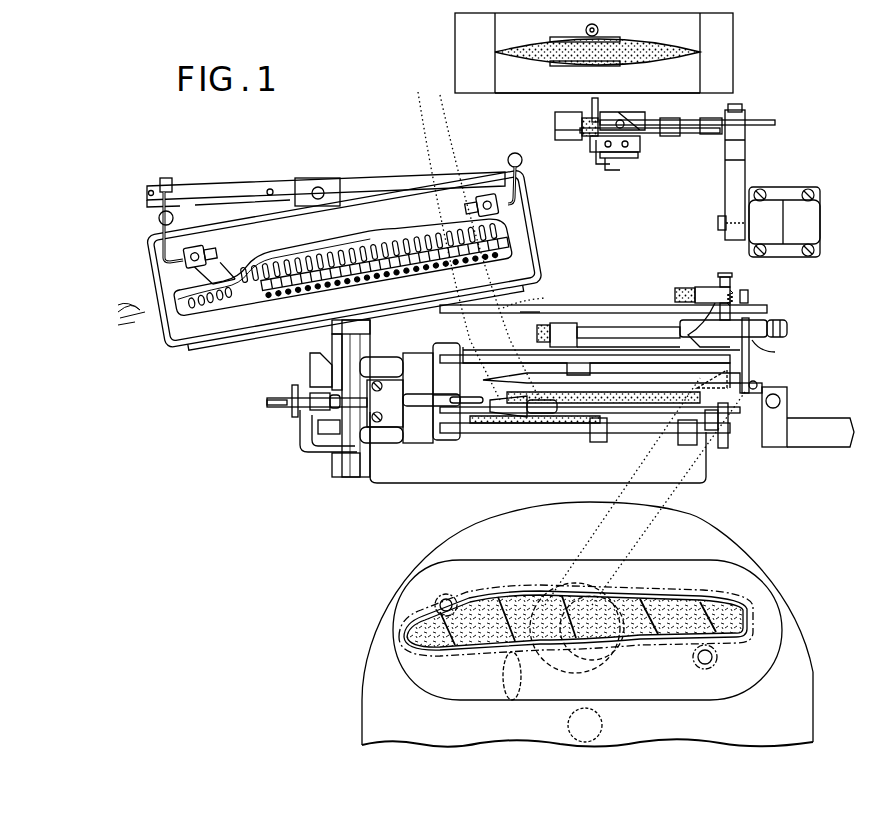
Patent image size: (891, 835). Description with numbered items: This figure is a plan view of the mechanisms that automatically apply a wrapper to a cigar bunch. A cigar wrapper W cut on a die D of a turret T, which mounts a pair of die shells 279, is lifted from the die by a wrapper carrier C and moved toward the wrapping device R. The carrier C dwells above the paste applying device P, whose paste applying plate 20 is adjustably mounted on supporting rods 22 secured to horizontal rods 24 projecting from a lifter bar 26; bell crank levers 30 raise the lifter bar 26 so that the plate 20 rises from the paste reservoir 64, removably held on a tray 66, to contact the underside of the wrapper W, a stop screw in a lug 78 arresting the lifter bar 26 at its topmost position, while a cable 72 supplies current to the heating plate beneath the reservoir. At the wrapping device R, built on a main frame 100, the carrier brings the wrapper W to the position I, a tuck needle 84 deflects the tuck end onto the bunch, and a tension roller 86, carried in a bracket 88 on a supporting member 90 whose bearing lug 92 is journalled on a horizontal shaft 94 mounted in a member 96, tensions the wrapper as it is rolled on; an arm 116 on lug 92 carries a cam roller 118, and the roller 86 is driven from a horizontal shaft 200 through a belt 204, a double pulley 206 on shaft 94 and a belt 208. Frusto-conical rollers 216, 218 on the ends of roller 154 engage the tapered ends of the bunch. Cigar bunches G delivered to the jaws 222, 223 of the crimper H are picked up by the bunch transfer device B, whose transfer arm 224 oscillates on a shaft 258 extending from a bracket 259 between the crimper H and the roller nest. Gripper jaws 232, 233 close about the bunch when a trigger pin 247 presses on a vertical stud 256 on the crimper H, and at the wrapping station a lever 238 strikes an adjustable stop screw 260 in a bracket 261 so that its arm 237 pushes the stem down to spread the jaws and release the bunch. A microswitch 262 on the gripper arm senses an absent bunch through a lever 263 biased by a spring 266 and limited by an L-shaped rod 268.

The paste applying plate 20 is at (520, 248).
The supporting rods 22 is at (522, 164).
The horizontal rods 24 is at (160, 182).
The lifter bar 26 is at (205, 192).
The bell crank levers 30 is at (228, 212).
The paste reservoir 64 is at (170, 350).
The tray 66 is at (220, 345).
The cable 72 is at (145, 310).
The lug 78 is at (338, 181).
The tuck needle 84 is at (470, 403).
The tension roller 86 is at (620, 373).
The bracket 88 is at (600, 360).
The supporting member 90 is at (658, 355).
The bearing lug 92 is at (566, 325).
The horizontal shaft 94 is at (537, 335).
The member 96 is at (595, 327).
The main frame 100 is at (708, 467).
The arm 116 is at (728, 347).
The cam roller 118 is at (720, 288).
The roller 154 is at (575, 414).
The horizontal shaft 200 is at (788, 327).
The belt 204 is at (768, 322).
The double pulley 206 is at (776, 352).
The belt 208 is at (752, 370).
The frusto-conical roller 216 is at (728, 433).
The frusto-conical roller 218 is at (520, 418).
The jaw 222 is at (503, 27).
The jaw 223 is at (509, 93).
The transfer arm 224 is at (747, 151).
The gripper jaw 232 is at (566, 115).
The gripper jaw 233 is at (570, 142).
The arm 237 is at (635, 113).
The lever 238 is at (757, 116).
The trigger pin 247 is at (602, 104).
The vertical stud 256 is at (600, 30).
The shaft 258 is at (717, 224).
The bracket 259 is at (812, 215).
The stop screw 260 is at (782, 394).
The bracket 261 is at (780, 425).
The microswitch 262 is at (642, 146).
The lever 263 is at (618, 165).
The spring 266 is at (622, 156).
The L-shaped rod 268 is at (598, 166).
The die shells 279 is at (770, 638).
The bunch transfer device B is at (770, 180).
The wrapper carrier C is at (655, 655).
The die D is at (675, 603).
The cigar bunch G is at (690, 42).
The cigar bunch crimper H is at (745, 63).
The position I is at (538, 297).
The paste applying device P is at (150, 322).
The wrapping device R is at (330, 482).
The turret T is at (360, 706).
The cigar wrapper W is at (722, 622).